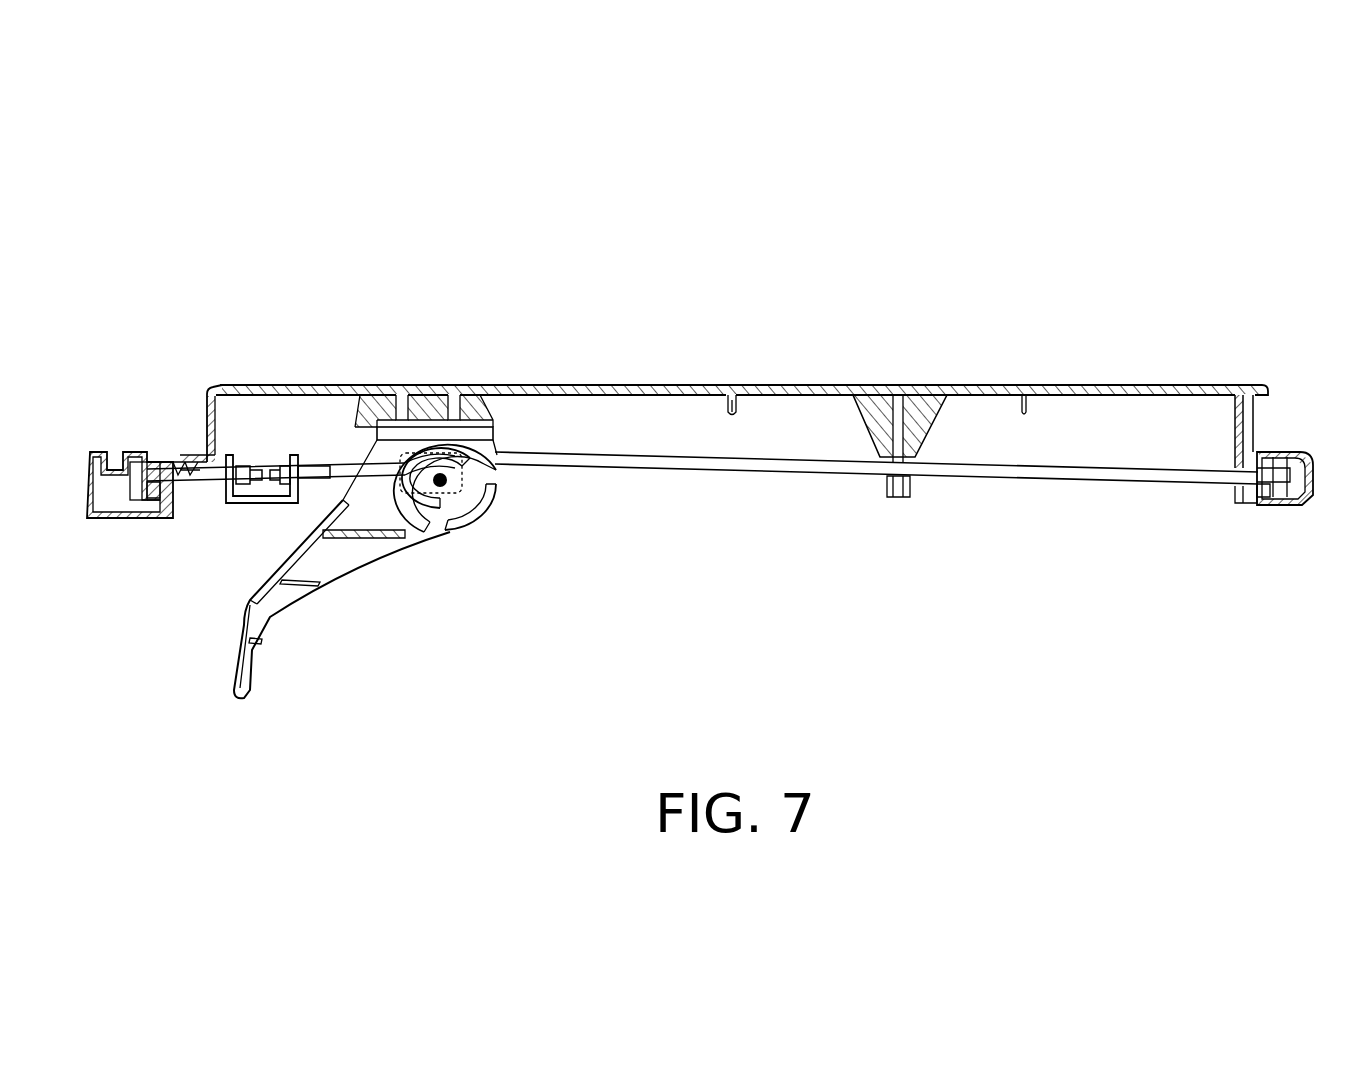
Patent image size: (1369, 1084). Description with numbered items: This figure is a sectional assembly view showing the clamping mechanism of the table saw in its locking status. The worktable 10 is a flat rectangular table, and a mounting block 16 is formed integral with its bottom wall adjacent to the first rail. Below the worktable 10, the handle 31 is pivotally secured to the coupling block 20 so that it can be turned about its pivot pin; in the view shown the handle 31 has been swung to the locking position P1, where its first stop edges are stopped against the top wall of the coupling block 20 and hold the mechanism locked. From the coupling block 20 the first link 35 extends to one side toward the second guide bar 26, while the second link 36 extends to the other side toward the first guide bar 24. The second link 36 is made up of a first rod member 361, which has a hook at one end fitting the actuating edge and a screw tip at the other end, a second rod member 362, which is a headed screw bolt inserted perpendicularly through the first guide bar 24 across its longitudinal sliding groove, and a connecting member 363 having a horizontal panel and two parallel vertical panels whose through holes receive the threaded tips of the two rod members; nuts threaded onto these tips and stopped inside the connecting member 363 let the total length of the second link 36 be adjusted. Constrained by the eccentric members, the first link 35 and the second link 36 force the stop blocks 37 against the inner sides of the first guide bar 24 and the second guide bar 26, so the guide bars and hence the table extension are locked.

The worktable 10 is at (813, 385).
The mounting block 16 is at (343, 392).
The coupling block 20 is at (494, 517).
The first guide bar 24 is at (110, 466).
The second guide bar 26 is at (1310, 455).
The handle 31 is at (252, 610).
The first link 35 is at (1055, 480).
The second link 36 is at (326, 232).
The first rod member 361 is at (340, 460).
The second rod member 362 is at (190, 455).
The connecting member 363 is at (273, 455).
The stop block 37 is at (157, 512).
The locking position P1 is at (325, 630).